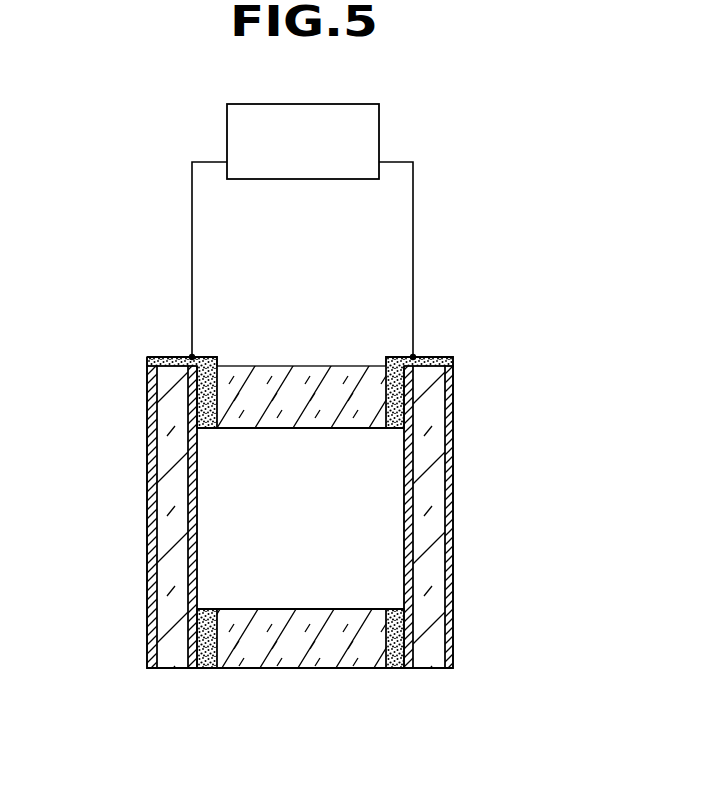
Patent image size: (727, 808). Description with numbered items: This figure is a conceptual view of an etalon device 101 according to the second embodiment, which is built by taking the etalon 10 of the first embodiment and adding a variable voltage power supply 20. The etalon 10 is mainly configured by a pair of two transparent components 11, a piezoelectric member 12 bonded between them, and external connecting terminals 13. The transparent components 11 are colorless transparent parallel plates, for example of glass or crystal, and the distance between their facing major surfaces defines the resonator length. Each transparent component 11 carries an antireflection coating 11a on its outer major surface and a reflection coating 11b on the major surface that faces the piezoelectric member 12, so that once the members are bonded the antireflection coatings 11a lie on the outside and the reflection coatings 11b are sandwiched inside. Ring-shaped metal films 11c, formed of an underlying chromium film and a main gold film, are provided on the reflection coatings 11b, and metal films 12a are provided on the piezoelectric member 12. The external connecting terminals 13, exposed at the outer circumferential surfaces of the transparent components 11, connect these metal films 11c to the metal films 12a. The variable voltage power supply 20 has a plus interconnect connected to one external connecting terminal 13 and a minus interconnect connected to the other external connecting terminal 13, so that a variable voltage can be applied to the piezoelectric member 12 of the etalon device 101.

The etalon device 101 is at (500, 215).
The variable voltage power supply 20 is at (227, 131).
The etalon 10 is at (123, 355).
The external connecting terminals 13 is at (160, 357).
The antireflection coatings 11a is at (151, 670).
The transparent components 11 is at (170, 670).
The reflection coatings 11b is at (191, 670).
The metal films 11c is at (202, 670).
The piezoelectric member 12 is at (297, 670).
The metal films 12a is at (207, 670).